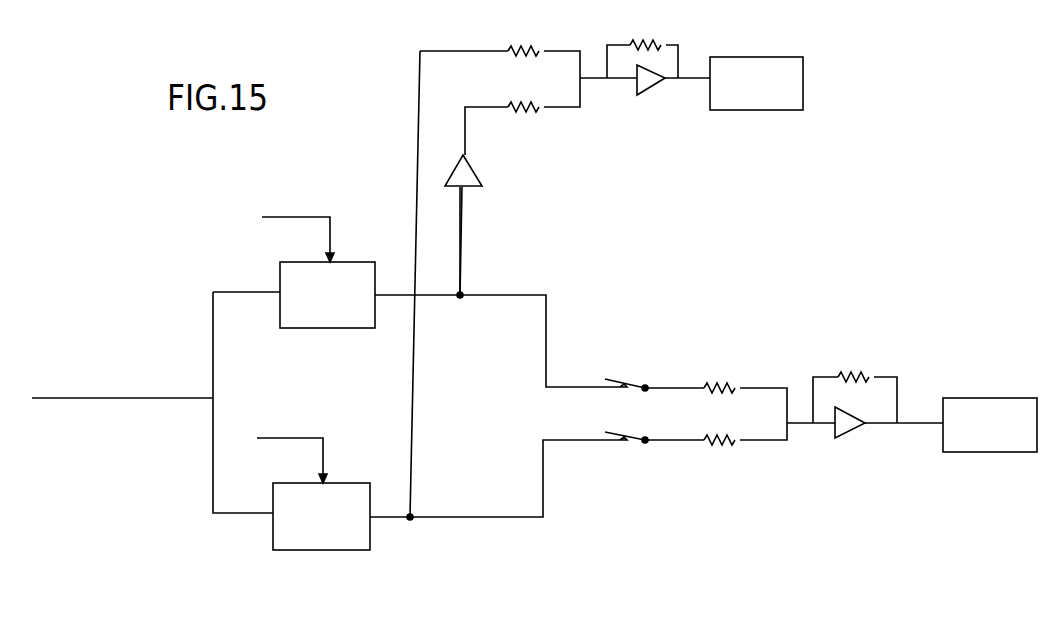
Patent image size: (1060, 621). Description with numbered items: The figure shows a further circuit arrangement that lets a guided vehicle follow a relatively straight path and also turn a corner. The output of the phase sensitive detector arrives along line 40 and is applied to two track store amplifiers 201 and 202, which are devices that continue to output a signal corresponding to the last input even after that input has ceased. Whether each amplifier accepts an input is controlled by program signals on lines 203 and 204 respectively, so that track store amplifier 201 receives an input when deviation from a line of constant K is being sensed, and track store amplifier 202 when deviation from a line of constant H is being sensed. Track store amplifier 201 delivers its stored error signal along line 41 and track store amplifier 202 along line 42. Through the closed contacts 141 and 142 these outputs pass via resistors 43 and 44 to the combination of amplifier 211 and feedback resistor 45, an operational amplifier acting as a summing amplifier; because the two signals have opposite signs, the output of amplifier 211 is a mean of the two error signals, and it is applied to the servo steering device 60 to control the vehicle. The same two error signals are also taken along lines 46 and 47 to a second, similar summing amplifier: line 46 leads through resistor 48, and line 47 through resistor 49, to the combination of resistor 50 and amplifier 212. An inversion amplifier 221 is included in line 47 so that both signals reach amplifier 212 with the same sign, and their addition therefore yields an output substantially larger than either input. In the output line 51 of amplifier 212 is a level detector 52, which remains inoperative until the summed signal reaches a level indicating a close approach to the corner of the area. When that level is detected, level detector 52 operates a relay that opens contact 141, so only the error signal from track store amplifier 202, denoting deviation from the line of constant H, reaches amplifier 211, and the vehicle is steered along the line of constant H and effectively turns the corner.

The line 40 is at (103, 398).
The track store amplifier 201 is at (292, 330).
The track store amplifier 202 is at (270, 536).
The line 203 is at (286, 215).
The line 204 is at (288, 427).
The line 41 is at (388, 290).
The line 42 is at (384, 512).
The line 46 is at (416, 166).
The line 47 is at (463, 238).
The inversion amplifier 221 is at (479, 175).
The resistor 48 is at (517, 50).
The resistor 49 is at (517, 105).
The resistor 50 is at (648, 44).
The amplifier 212 is at (652, 95).
The output line 51 is at (695, 82).
The level detector 52 is at (755, 112).
The contact 141 is at (631, 384).
The contact 142 is at (629, 443).
The resistor 43 is at (719, 388).
The resistor 44 is at (721, 444).
The resistor 45 is at (856, 375).
The amplifier 211 is at (850, 435).
The servo steering device 60 is at (985, 454).